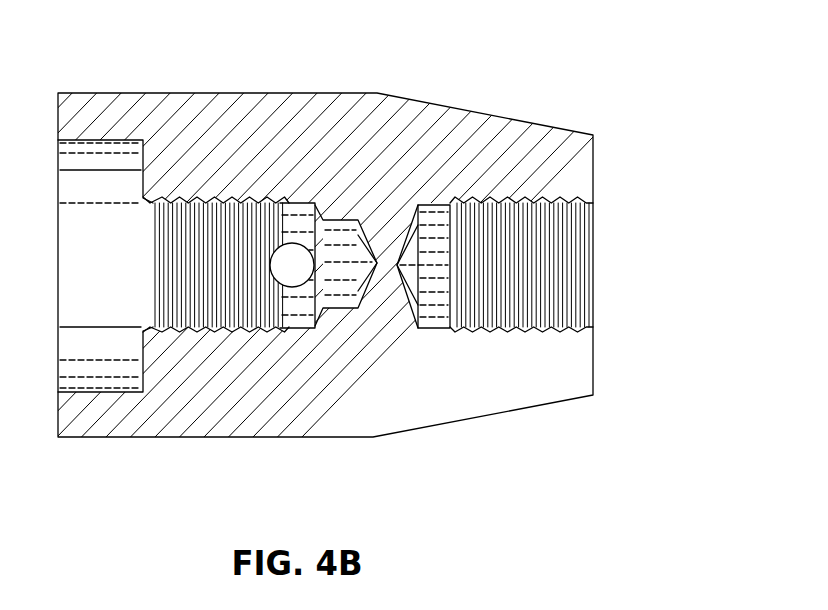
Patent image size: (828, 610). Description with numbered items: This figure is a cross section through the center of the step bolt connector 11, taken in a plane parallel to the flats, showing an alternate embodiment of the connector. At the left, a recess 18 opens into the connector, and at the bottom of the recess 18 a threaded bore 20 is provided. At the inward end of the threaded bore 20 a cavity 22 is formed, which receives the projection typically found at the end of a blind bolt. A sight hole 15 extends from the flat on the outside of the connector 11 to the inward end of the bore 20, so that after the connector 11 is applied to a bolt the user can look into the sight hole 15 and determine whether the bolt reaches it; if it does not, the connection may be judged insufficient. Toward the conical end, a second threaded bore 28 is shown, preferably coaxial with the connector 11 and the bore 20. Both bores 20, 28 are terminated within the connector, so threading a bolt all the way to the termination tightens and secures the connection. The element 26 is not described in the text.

The step bolt connector 11 is at (638, 152).
The sight hole 15 is at (290, 253).
The recess 18 is at (130, 93).
The threaded bore 20 is at (176, 334).
The cavity 22 is at (340, 230).
The insert 26 is at (385, 222).
The threaded bore 28 is at (528, 337).